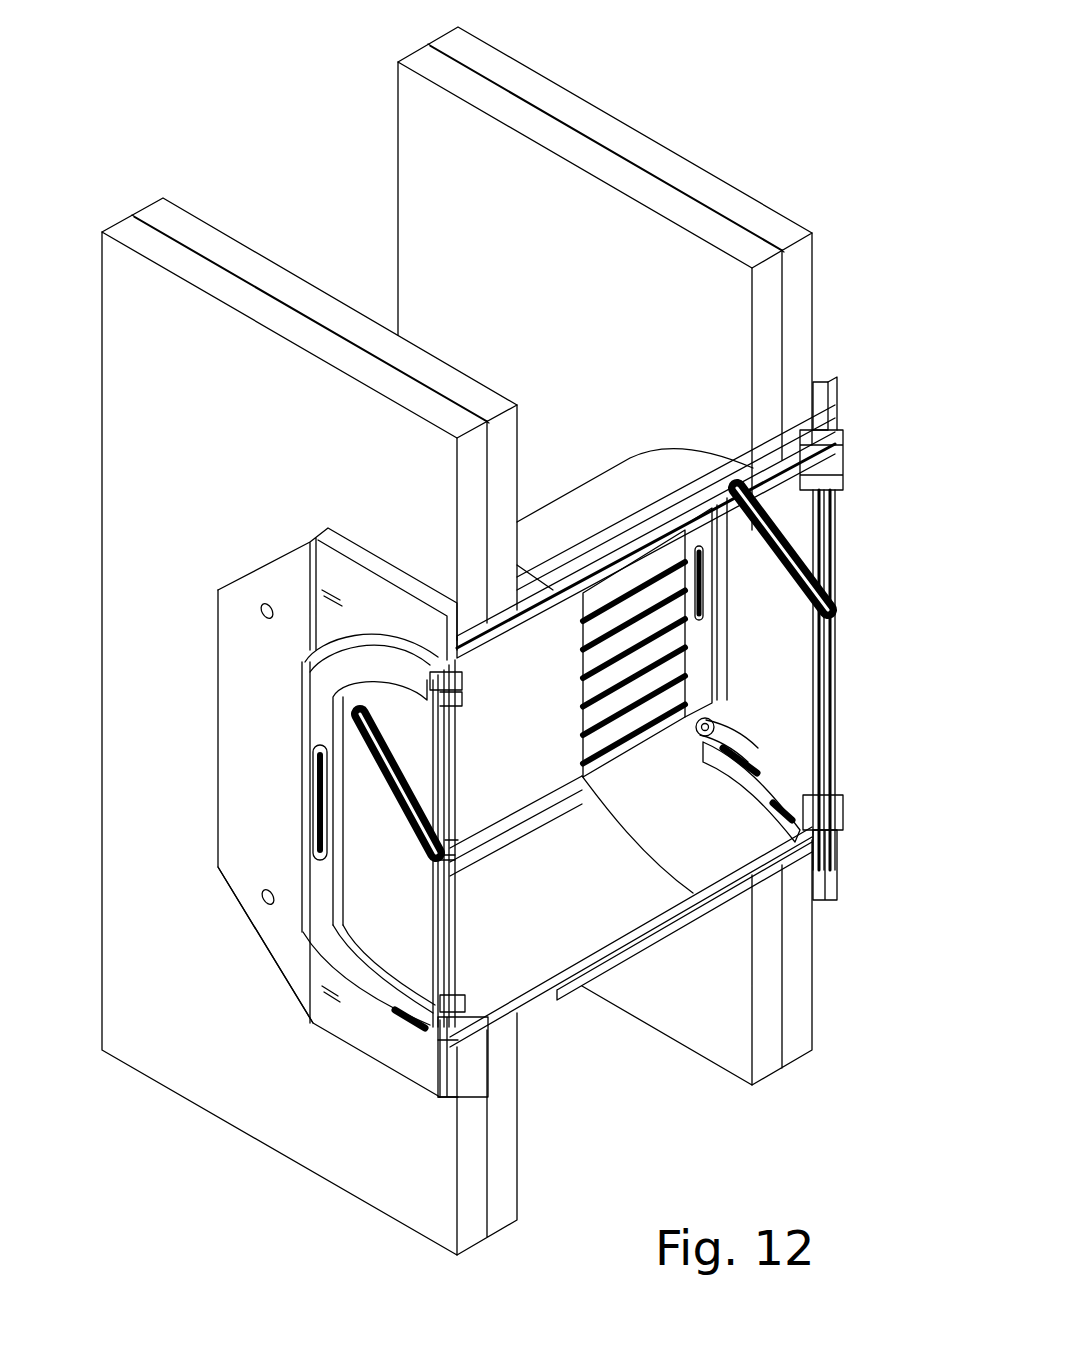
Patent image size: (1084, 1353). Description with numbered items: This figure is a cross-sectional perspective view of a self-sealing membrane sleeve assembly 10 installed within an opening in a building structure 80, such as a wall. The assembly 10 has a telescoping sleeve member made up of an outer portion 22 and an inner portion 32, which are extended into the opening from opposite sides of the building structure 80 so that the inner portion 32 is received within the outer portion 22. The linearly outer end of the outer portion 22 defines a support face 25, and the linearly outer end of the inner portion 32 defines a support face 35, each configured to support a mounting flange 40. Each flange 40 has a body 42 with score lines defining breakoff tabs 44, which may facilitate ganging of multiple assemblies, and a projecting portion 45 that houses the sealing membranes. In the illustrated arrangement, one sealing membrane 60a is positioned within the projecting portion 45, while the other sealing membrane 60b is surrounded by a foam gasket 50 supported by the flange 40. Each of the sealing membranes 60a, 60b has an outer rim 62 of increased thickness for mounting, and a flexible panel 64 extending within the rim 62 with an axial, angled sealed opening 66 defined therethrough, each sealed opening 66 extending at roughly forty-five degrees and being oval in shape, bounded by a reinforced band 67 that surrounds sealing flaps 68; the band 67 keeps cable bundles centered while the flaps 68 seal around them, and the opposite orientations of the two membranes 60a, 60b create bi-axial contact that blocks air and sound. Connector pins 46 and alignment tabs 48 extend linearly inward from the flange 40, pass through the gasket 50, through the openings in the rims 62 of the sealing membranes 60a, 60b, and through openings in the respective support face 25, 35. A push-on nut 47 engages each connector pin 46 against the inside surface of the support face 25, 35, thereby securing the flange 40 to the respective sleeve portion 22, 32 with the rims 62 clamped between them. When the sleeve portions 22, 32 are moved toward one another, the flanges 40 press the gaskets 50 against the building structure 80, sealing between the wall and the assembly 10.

The self-sealing membrane sleeve assembly 10 is at (842, 388).
The outer portion 22 is at (700, 876).
The support face 25 is at (768, 790).
The inner portion 32 is at (550, 974).
The support face 35 is at (462, 1003).
The mounting flange 40 is at (838, 860).
The body 42 is at (378, 1042).
The breakoff tabs 44 is at (248, 787).
The projecting portion 45 is at (300, 935).
The connector pins 46 is at (698, 735).
The push-on nut 47 is at (718, 770).
The alignment tabs 48 is at (832, 462).
The foam gasket 50 is at (826, 884).
The sealing membrane 60a is at (800, 720).
The sealing membrane 60b is at (838, 706).
The outer rim 62 is at (458, 665).
The flexible panel 64 is at (813, 520).
The sealed opening 66 is at (820, 596).
The reinforced band 67 is at (440, 790).
The sealing flaps 68 is at (458, 840).
The building structure 80 is at (118, 224).